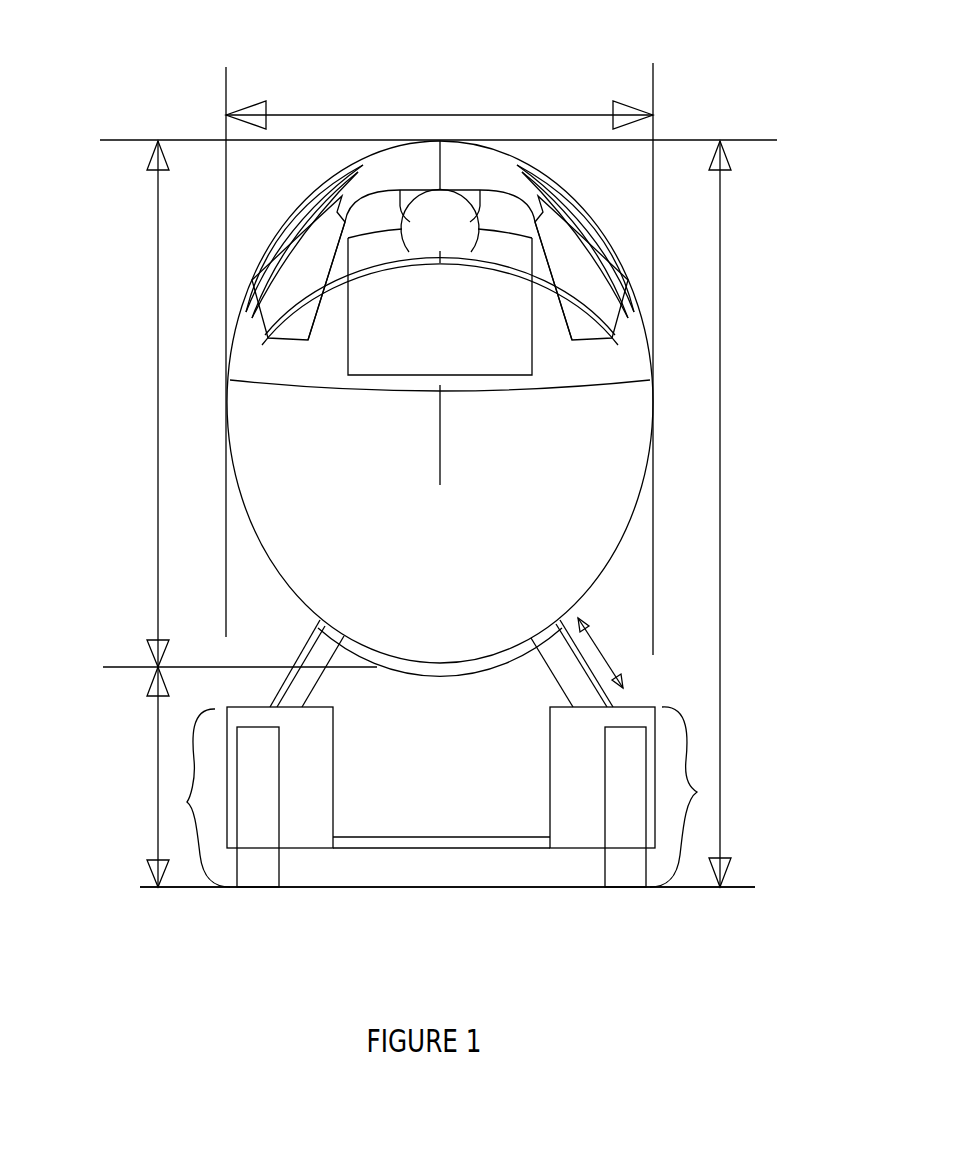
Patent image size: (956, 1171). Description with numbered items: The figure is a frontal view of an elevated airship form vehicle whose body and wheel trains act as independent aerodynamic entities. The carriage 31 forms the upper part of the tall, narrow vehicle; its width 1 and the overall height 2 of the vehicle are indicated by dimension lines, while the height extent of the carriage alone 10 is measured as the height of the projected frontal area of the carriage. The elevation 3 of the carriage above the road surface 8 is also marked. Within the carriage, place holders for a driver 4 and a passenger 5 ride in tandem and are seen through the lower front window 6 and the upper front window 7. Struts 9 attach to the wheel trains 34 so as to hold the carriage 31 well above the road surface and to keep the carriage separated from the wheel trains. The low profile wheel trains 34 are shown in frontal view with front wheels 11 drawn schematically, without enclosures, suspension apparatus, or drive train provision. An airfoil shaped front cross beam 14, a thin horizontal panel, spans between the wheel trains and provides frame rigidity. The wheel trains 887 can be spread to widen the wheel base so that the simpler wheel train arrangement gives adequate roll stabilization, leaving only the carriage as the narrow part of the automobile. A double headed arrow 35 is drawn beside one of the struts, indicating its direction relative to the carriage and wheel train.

The width of the carriage 1 is at (422, 115).
The overall height 2 is at (720, 468).
The elevation 3 is at (158, 725).
The driver 4 is at (348, 336).
The passenger 5 is at (262, 342).
The lower front window 6 is at (287, 340).
The upper front window 7 is at (250, 312).
The road surface 8 is at (420, 888).
The struts 9 is at (545, 668).
The height extent of the carriage 10 is at (158, 568).
The front wheels 11 is at (282, 868).
The front cross beam 14 is at (470, 848).
The carriage 31 is at (615, 500).
The wheel trains 34 is at (227, 828).
The strut travel arrow 35 is at (600, 652).
The wheel trains 887 is at (187, 802).